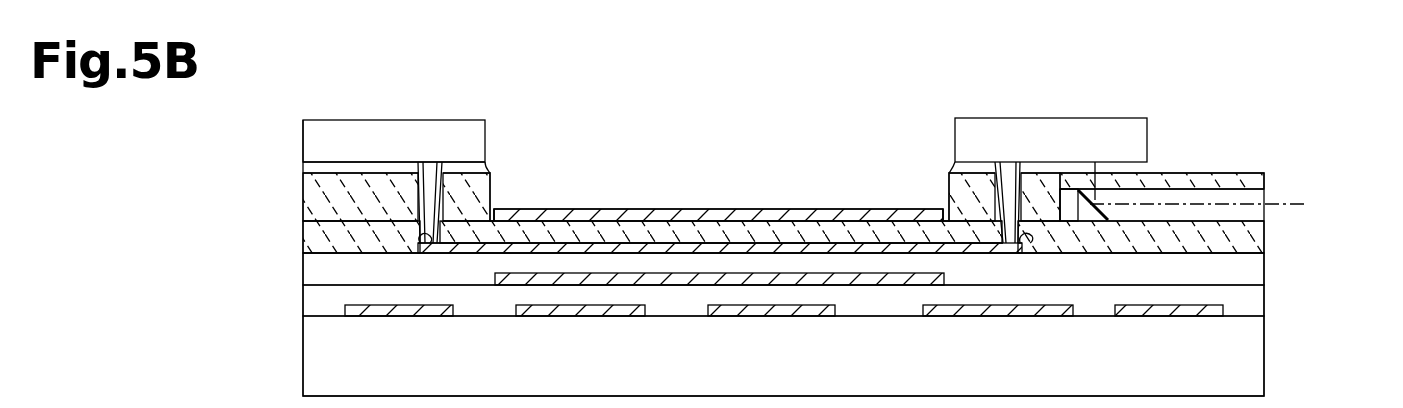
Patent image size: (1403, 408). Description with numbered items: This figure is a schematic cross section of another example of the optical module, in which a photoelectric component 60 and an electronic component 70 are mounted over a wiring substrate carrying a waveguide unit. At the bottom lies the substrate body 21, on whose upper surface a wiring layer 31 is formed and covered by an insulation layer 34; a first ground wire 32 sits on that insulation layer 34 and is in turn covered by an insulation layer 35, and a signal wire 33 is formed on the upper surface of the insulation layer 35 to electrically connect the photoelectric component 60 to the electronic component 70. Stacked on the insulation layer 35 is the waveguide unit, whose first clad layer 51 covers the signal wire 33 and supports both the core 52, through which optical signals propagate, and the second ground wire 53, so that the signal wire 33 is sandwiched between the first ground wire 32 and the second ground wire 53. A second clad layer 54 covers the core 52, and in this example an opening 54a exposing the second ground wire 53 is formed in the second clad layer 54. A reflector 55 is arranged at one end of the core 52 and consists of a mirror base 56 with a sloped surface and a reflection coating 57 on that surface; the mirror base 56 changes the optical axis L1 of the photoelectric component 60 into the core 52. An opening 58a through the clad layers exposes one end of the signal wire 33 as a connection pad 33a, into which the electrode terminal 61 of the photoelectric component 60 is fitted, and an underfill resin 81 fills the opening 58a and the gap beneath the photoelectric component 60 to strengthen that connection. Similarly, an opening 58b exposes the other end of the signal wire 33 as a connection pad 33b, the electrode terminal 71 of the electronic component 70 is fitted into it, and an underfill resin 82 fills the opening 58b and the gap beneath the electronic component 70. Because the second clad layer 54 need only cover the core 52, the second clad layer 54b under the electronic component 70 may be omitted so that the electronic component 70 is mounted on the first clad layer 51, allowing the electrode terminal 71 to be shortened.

The substrate body 21 is at (1262, 367).
The wiring layer 31 is at (1052, 318).
The first ground wire 32 is at (882, 286).
The signal wire 33 is at (953, 255).
The connection pad 33a is at (1025, 241).
The connection pad 33b is at (417, 243).
The insulation layer 34 is at (1262, 302).
The insulation layer 35 is at (1262, 271).
The first clad layer 51 is at (1262, 238).
The core 52 is at (1263, 195).
The second ground wire 53 is at (775, 208).
The second clad layer 54 is at (1245, 172).
The opening 54a is at (948, 182).
The second clad layer 54b is at (303, 198).
The reflector 55 is at (1198, 65).
The mirror base 56 is at (1068, 190).
The reflection coating 57 is at (1107, 220).
The opening 58a is at (997, 180).
The opening 58b is at (418, 178).
The photoelectric component 60 is at (1047, 118).
The electrode terminal 61 is at (1016, 185).
The electronic component 70 is at (330, 119).
The electrode terminal 71 is at (442, 167).
The underfill resin 81 is at (1160, 172).
The underfill resin 82 is at (491, 172).
The optical axis L1 is at (1295, 204).